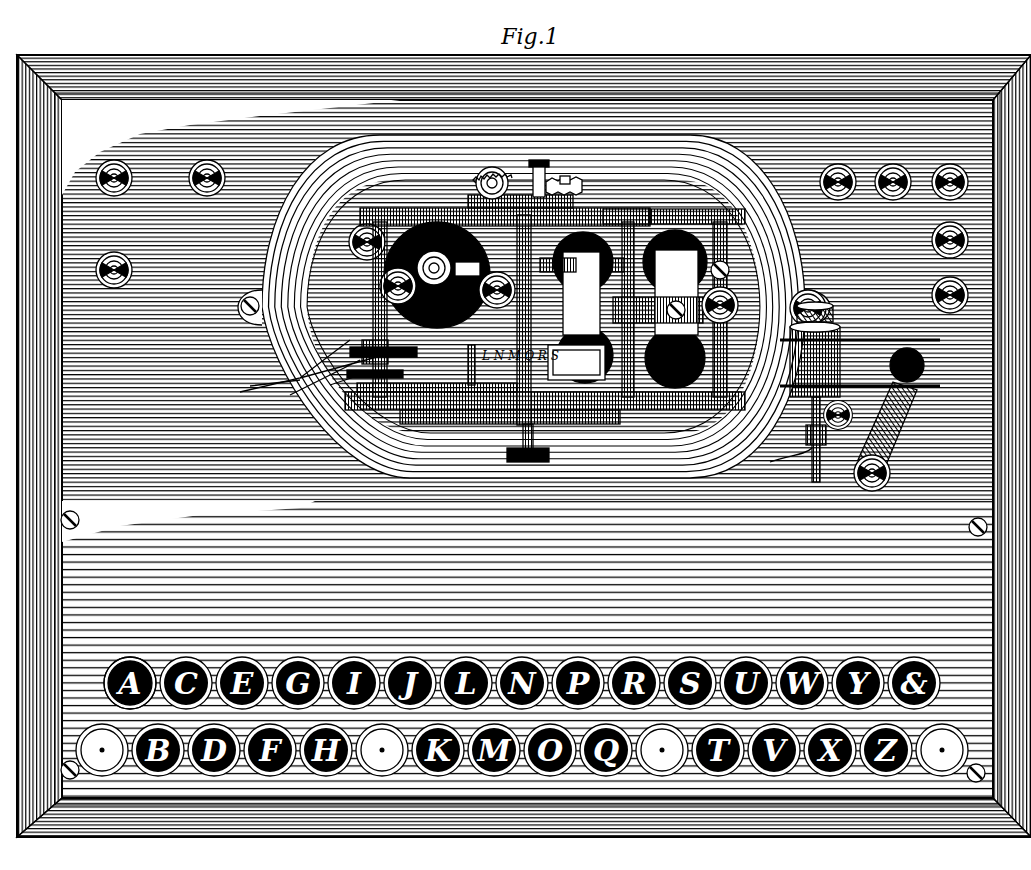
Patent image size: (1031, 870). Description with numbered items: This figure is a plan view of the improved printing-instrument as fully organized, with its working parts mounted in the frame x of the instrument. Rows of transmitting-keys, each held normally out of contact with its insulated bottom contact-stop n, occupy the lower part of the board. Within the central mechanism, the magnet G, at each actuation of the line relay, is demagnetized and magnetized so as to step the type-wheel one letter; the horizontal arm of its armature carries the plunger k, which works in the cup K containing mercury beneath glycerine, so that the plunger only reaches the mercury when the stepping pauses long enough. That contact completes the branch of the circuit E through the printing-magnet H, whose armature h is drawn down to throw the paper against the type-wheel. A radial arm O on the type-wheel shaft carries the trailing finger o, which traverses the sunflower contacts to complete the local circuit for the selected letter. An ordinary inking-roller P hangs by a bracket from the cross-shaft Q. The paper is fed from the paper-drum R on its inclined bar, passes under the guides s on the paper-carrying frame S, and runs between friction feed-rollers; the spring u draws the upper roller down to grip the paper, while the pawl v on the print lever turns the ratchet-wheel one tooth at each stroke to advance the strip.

The oval frame Y is at (352, 205).
The cup K is at (430, 215).
The radial arm O is at (508, 180).
The trailing finger o is at (562, 180).
The printing-magnet H is at (712, 212).
The magnet G is at (670, 309).
The armature h is at (667, 304).
The circuit E is at (712, 275).
The inking-roller P is at (576, 362).
The cross-shaft Q is at (527, 320).
The plunger k is at (384, 272).
The spring u is at (388, 352).
The ratchet wheel w is at (404, 372).
The guide s is at (473, 365).
The link y is at (275, 391).
The pawl v is at (341, 388).
The paper-carrying frame S is at (545, 403).
The paper-drum R is at (860, 396).
The frame x is at (527, 649).
The bottom contact-stop n is at (527, 647).